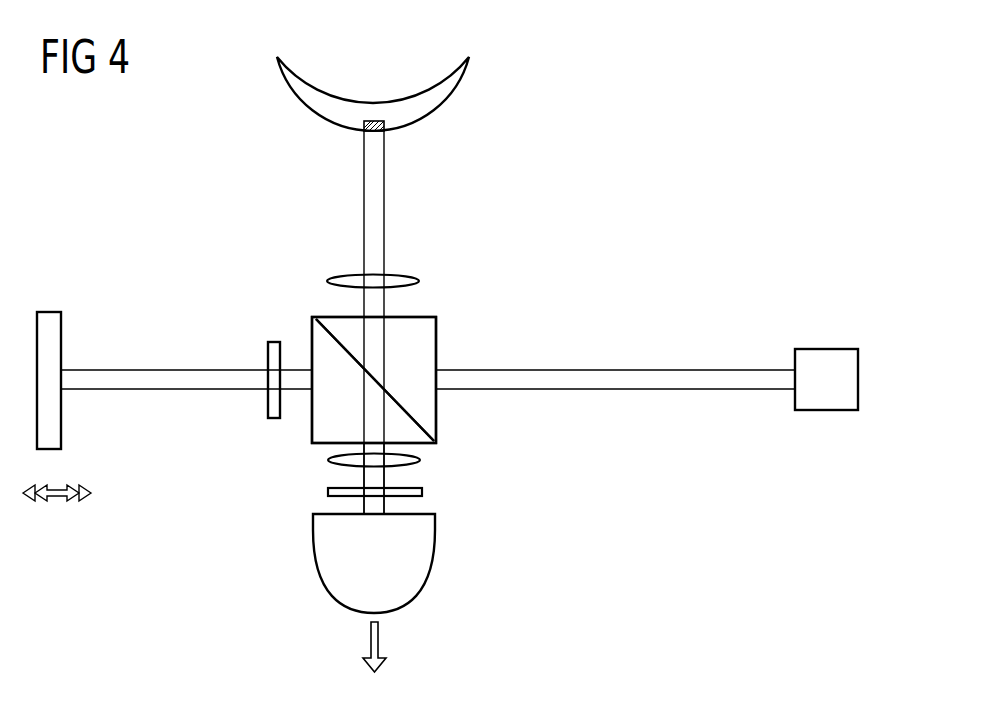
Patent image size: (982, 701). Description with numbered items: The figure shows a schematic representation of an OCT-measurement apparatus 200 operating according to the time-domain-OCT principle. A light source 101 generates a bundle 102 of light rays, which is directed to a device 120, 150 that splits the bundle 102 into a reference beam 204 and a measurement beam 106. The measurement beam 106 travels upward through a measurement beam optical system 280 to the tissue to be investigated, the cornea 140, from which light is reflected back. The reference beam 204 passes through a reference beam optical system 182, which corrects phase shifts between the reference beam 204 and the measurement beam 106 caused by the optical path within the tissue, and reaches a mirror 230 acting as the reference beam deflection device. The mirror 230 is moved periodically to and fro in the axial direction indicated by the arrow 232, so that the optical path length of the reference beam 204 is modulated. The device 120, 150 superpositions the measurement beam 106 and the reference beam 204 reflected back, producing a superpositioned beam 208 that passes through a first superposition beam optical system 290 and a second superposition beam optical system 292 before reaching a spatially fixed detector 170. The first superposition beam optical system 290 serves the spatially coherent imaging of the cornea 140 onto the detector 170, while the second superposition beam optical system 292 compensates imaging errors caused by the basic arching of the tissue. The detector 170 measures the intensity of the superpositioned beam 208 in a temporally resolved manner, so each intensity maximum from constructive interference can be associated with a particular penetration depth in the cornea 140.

The OCT-measurement apparatus 200 is at (624, 151).
The cornea 140 is at (422, 125).
The measurement beam 106 is at (368, 199).
The measurement beam optical system 280 is at (427, 281).
The splitting device 120 is at (449, 415).
The superpositioning device 150 is at (374, 380).
The reference beam 204 is at (143, 376).
The bundle of light rays 102 is at (690, 376).
The light source 101 is at (828, 349).
The mirror 230 is at (48, 311).
The arrow 232 is at (56, 500).
The reference beam optical system 182 is at (273, 341).
The first superposition beam optical system 290 is at (427, 460).
The superpositioned beam 208 is at (374, 477).
The second superposition beam optical system 292 is at (427, 493).
The detector 170 is at (456, 562).